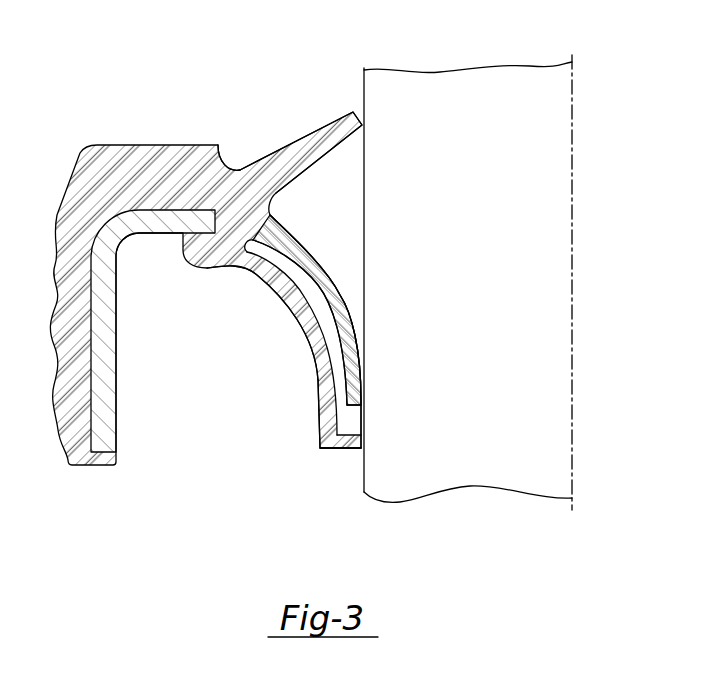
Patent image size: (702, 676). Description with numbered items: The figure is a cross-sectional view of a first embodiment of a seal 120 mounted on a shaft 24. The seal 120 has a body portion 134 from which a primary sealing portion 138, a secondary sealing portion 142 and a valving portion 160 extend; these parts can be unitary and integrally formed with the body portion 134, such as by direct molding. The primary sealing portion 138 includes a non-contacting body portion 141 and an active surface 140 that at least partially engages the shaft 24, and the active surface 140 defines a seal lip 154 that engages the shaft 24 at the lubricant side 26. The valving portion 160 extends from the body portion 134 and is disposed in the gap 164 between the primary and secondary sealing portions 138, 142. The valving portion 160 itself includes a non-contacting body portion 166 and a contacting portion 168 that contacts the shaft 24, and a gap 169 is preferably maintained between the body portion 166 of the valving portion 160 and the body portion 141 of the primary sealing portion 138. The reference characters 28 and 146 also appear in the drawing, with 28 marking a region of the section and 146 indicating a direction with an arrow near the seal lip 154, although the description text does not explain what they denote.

The seal 120 is at (118, 104).
The body portion 134 is at (224, 174).
The gap 28 is at (290, 120).
The secondary sealing portion 142 is at (327, 132).
The valving portion 160 is at (307, 264).
The non-contacting body portion 166 is at (316, 272).
The gap 164 is at (350, 290).
The gap 169 is at (338, 345).
The contacting portion 168 is at (357, 416).
The non-contacting body portion 141 is at (283, 293).
The primary sealing portion 138 is at (311, 359).
The seal lip 154 is at (335, 452).
The active surface 140 is at (376, 449).
The direction arrow 146 is at (352, 477).
The shaft 24 is at (457, 242).
The lubricant side 26 is at (172, 430).